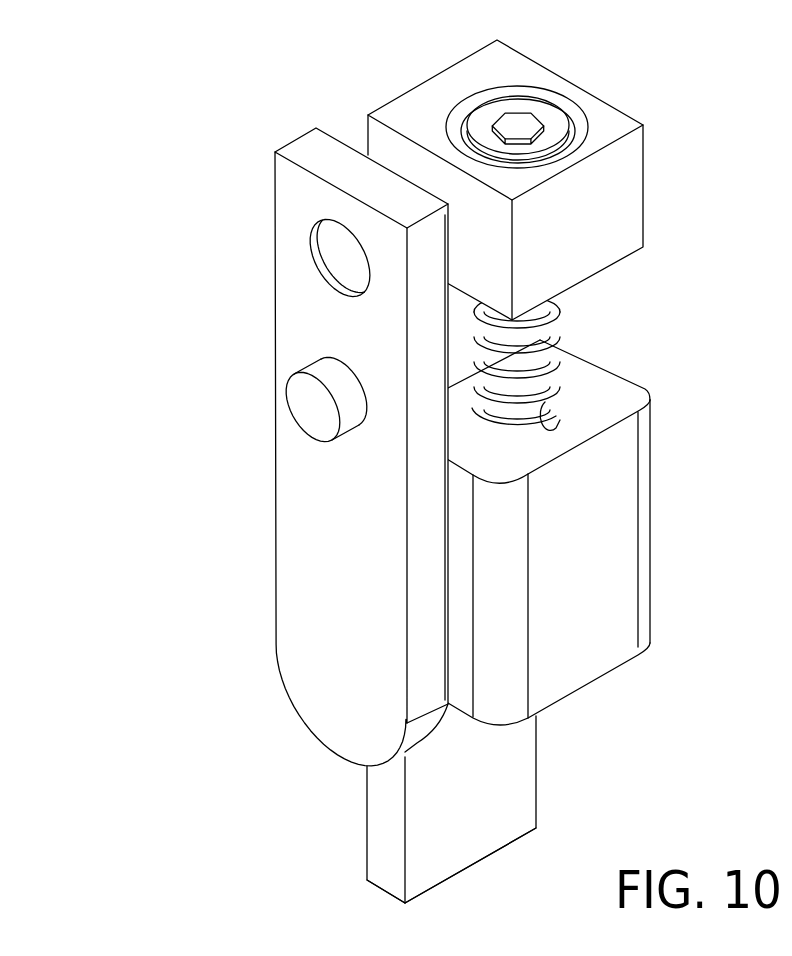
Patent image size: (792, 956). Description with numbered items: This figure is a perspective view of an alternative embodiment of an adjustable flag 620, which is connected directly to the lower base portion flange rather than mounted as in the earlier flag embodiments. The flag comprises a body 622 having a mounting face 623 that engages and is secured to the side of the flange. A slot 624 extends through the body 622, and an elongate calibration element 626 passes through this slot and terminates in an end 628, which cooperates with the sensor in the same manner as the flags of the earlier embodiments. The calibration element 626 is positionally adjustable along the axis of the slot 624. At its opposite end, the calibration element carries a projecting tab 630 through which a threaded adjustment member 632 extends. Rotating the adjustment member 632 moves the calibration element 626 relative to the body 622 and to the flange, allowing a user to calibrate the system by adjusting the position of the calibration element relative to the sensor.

The flag 620 is at (182, 113).
The body 622 is at (643, 492).
The mounting face 623 is at (288, 325).
The slot 624 is at (447, 400).
The calibration element 626 is at (537, 784).
The end 628 is at (377, 890).
The projecting tab 630 is at (645, 185).
The adjustment member 632 is at (553, 117).